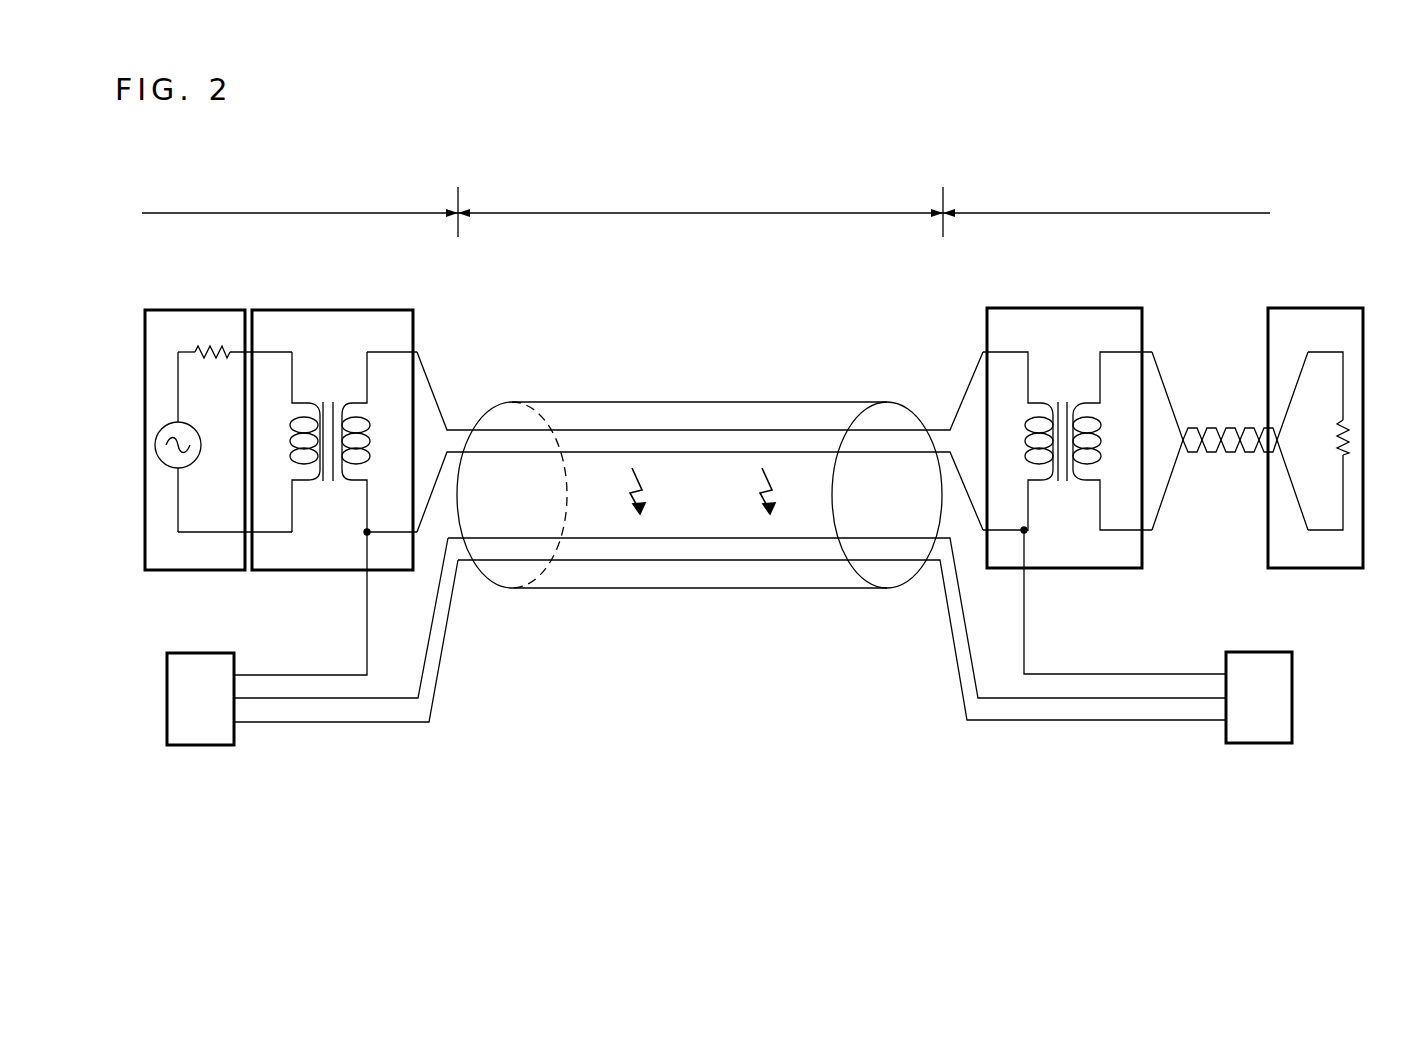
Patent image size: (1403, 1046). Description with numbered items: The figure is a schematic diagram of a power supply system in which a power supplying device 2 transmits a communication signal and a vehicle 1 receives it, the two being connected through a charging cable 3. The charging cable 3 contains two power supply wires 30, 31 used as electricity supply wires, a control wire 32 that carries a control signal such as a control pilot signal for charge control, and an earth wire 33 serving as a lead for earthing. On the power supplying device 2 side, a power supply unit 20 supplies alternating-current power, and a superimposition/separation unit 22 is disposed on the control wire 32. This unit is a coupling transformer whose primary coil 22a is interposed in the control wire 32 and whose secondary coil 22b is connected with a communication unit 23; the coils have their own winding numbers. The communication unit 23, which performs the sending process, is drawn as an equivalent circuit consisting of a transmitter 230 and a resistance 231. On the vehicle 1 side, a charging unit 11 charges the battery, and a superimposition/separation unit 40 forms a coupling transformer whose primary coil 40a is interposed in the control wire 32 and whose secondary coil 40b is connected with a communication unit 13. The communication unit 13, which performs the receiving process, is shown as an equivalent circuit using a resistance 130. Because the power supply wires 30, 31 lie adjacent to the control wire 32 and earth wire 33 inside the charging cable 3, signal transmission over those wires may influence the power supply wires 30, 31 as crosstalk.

The vehicle 1 is at (1173, 463).
The power supplying device 2 is at (301, 484).
The charging cable 3 is at (821, 453).
The charging unit 11 is at (1273, 652).
The communication unit 13 is at (1300, 303).
The resistance 130 is at (1340, 450).
The power supply unit 20 is at (192, 745).
The superimposition/separation unit 22 is at (352, 307).
The primary coil 22a is at (355, 481).
The secondary coil 22b is at (300, 481).
The communication unit 23 is at (228, 307).
The transmitter 230 is at (167, 470).
The resistance 231 is at (205, 342).
The power supply wire 30 is at (757, 537).
The power supply wire 31 is at (657, 560).
The control wire 32 is at (710, 428).
The earth wire 33 is at (755, 452).
The superimposition/separation unit 40 is at (1075, 307).
The primary coil 40a is at (1043, 483).
The secondary coil 40b is at (1090, 483).